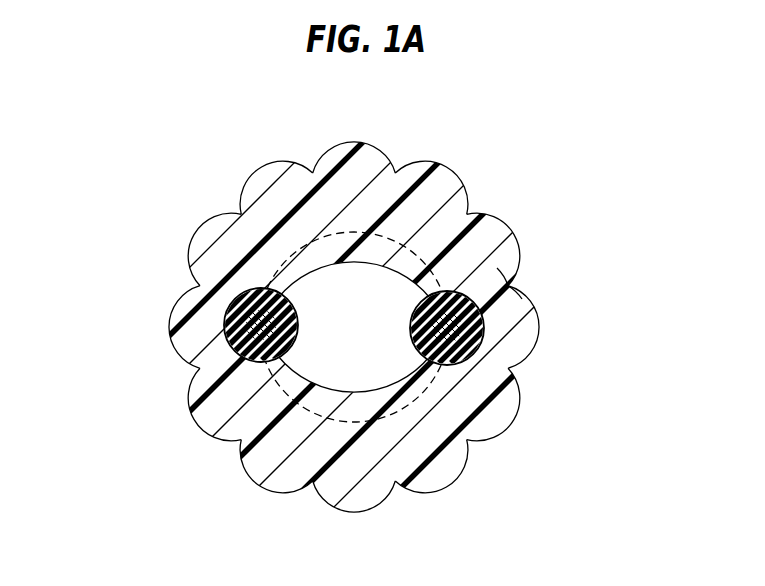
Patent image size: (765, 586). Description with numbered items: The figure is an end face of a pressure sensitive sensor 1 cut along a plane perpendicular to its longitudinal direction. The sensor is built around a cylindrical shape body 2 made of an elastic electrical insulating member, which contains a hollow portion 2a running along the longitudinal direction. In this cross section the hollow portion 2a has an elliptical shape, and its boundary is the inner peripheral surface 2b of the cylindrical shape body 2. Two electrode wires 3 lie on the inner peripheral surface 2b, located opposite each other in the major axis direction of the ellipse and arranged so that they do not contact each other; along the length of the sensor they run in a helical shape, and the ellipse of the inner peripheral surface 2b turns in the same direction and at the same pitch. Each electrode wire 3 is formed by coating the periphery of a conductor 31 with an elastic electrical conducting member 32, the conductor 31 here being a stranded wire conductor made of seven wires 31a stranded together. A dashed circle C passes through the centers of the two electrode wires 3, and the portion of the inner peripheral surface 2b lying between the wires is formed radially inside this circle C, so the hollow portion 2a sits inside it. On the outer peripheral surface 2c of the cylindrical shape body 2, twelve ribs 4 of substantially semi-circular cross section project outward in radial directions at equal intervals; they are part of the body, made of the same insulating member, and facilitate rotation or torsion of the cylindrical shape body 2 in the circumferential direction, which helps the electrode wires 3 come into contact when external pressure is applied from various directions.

The pressure sensitive sensor 1 is at (181, 166).
The cylindrical shape body 2 is at (466, 160).
The hollow portion 2a is at (392, 275).
The inner peripheral surface 2b is at (302, 270).
The outer peripheral surface 2c is at (514, 287).
The electrode wire 3 is at (198, 286).
The conductor 31 is at (226, 318).
The wire 31a is at (224, 331).
The elastic electrical conducting member 32 is at (231, 352).
The rib 4 is at (529, 363).
The circle C is at (308, 240).